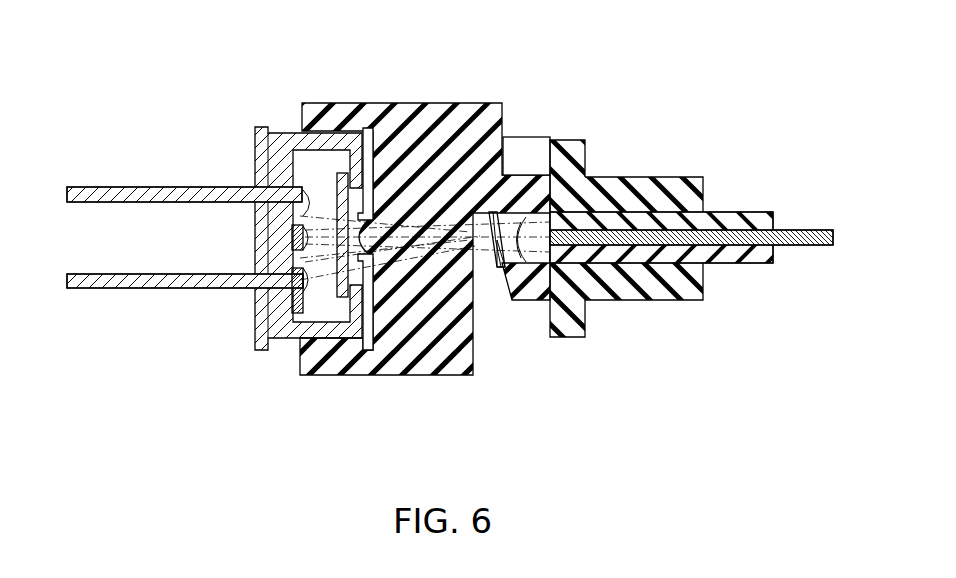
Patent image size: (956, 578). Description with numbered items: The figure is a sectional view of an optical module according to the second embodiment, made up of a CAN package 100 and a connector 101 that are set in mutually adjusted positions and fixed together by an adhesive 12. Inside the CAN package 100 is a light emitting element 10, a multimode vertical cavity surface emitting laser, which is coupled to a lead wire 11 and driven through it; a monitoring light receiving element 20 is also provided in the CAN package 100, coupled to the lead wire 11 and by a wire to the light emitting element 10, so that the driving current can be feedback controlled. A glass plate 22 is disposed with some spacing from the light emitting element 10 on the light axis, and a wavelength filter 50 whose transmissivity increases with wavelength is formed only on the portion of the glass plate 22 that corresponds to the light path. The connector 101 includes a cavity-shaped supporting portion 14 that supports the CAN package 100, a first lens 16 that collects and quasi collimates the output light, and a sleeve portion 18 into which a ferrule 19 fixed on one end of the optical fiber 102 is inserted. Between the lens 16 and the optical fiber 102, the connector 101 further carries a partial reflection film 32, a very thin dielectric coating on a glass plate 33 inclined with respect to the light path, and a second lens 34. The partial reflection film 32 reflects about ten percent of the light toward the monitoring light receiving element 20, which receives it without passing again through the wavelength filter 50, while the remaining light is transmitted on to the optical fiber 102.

The light emitting element 10 is at (296, 236).
The lead wire 11 is at (164, 189).
The adhesive 12 is at (333, 127).
The supporting portion 14 is at (310, 374).
The lens 16 is at (360, 298).
The sleeve portion 18 is at (628, 300).
The ferrule 19 is at (608, 205).
The monitoring light receiving element 20 is at (296, 300).
The glass plate 22 is at (370, 197).
The partial reflection film 32 is at (497, 270).
The glass plate 33 is at (496, 211).
The lens 34 is at (518, 269).
The wavelength filter 50 is at (293, 287).
The CAN package 100 is at (285, 136).
The connector 101 is at (506, 137).
The optical fiber 102 is at (727, 228).